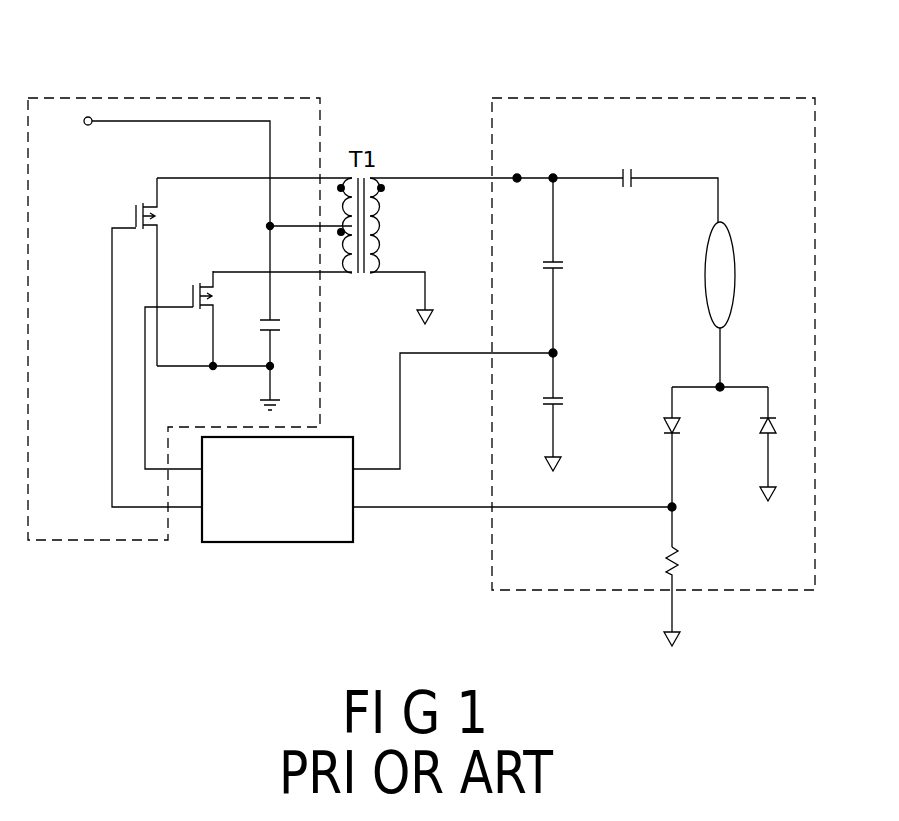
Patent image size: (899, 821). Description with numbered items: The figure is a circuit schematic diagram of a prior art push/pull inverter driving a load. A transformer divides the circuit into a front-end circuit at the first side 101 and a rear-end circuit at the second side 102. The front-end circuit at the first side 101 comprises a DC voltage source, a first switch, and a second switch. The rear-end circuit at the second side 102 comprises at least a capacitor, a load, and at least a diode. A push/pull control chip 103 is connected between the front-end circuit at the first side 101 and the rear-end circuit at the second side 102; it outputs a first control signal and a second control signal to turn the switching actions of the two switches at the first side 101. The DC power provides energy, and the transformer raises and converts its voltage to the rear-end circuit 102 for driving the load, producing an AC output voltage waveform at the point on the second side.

The first side 101 is at (172, 98).
The second side 102 is at (652, 98).
The push/pull control chip 103 is at (265, 543).